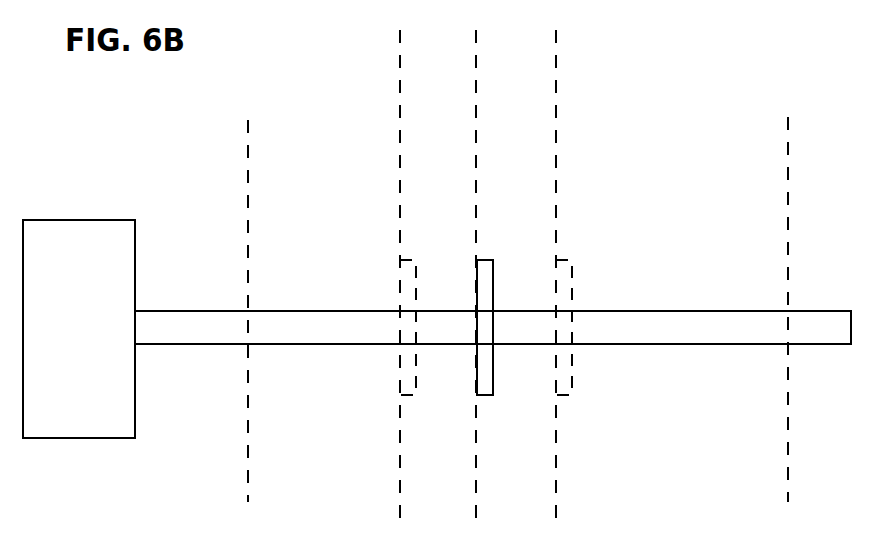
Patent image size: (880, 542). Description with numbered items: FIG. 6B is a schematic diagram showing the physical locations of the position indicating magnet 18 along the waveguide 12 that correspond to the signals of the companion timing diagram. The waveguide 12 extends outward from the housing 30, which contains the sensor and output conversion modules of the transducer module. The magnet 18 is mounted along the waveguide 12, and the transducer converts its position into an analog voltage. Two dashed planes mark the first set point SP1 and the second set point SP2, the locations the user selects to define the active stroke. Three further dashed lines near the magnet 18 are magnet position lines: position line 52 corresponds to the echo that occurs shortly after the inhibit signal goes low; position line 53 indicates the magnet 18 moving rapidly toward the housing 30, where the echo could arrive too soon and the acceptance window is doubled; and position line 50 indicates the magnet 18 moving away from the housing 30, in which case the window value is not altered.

The housing 30 is at (78, 220).
The waveguide 12 is at (210, 311).
The position indicating magnet 18 is at (488, 397).
The position line 50 is at (556, 70).
The magnet position line 52 is at (476, 70).
The position line 53 is at (400, 70).
The first set point SP1 is at (249, 467).
The second set point SP2 is at (788, 465).